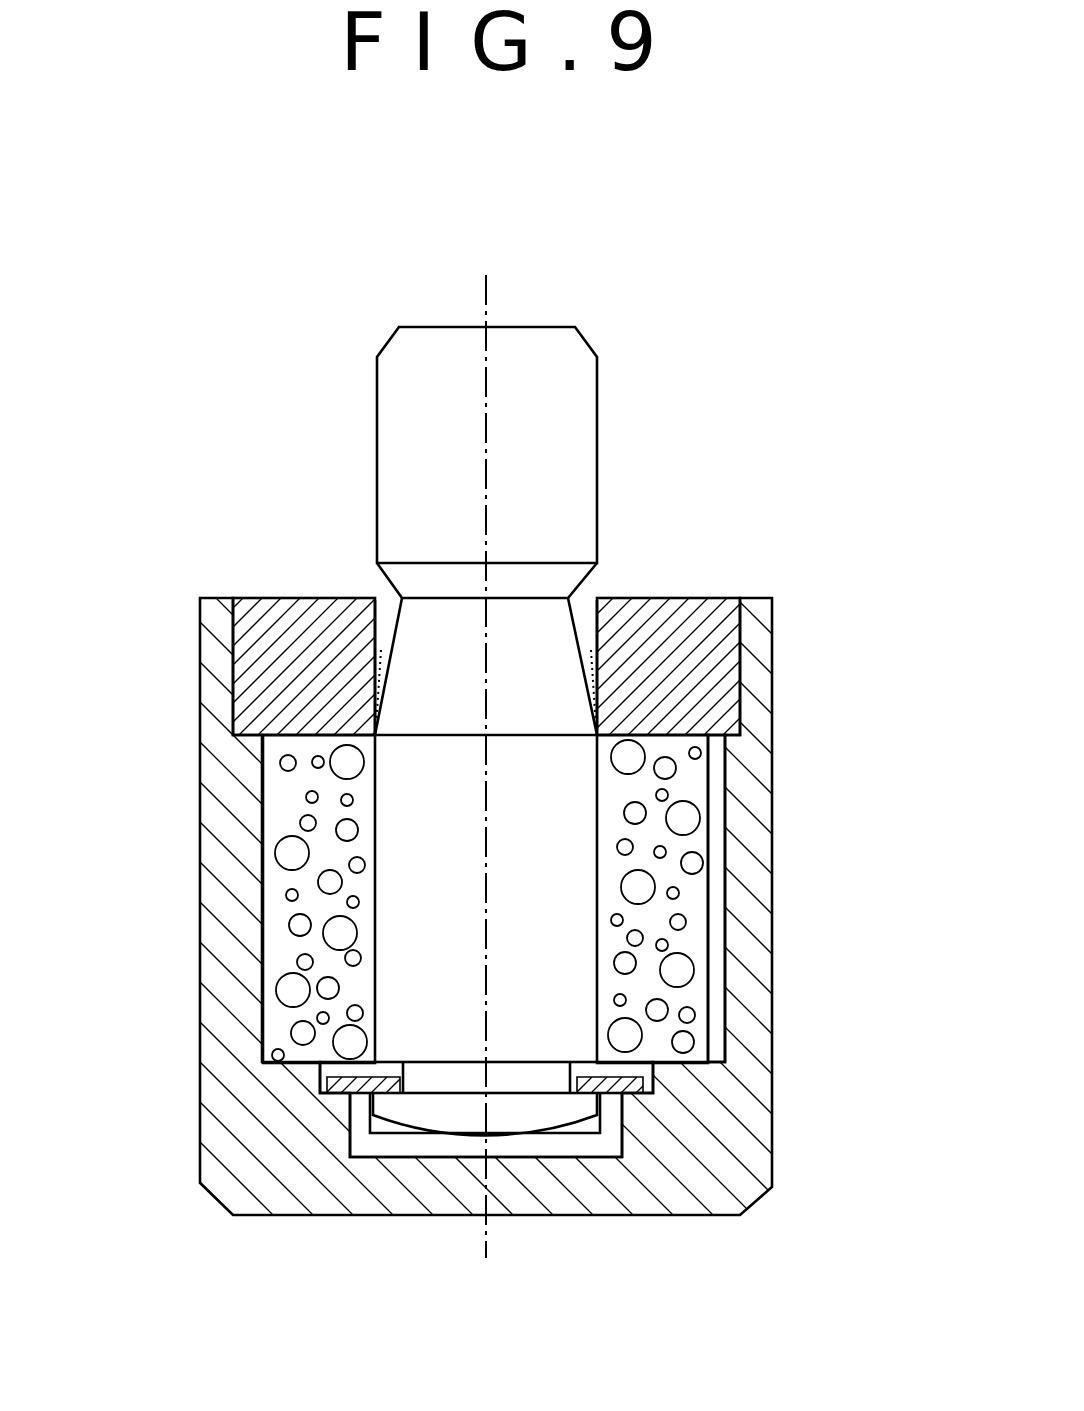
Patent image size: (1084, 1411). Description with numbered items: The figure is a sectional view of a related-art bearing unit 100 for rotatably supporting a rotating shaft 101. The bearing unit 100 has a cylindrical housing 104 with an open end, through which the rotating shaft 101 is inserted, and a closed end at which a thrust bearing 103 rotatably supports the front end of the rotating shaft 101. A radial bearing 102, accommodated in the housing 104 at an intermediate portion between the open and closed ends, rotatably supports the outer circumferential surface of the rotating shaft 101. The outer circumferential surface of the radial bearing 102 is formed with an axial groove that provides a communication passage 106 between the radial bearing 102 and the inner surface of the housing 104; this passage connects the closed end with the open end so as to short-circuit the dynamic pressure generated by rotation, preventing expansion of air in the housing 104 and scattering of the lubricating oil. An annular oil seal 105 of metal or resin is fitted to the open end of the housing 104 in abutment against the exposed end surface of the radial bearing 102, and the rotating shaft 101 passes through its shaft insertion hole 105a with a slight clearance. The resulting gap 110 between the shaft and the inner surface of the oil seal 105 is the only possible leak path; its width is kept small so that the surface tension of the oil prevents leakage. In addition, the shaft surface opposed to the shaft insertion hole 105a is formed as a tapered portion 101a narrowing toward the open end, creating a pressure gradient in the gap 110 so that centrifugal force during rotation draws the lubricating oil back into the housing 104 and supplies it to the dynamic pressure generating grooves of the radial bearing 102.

The bearing unit 100 is at (790, 256).
The rotating shaft 101 is at (580, 383).
The tapered portion 101a is at (385, 656).
The radial bearing 102 is at (693, 948).
The thrust bearing 103 is at (405, 1143).
The housing 104 is at (715, 1125).
The oil seal 105 is at (693, 642).
The shaft insertion hole 105a is at (587, 617).
The communication passage 106 is at (715, 818).
The gap 110 is at (392, 618).